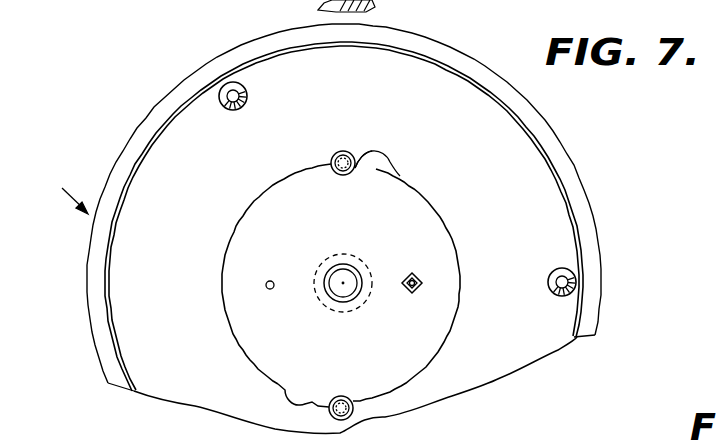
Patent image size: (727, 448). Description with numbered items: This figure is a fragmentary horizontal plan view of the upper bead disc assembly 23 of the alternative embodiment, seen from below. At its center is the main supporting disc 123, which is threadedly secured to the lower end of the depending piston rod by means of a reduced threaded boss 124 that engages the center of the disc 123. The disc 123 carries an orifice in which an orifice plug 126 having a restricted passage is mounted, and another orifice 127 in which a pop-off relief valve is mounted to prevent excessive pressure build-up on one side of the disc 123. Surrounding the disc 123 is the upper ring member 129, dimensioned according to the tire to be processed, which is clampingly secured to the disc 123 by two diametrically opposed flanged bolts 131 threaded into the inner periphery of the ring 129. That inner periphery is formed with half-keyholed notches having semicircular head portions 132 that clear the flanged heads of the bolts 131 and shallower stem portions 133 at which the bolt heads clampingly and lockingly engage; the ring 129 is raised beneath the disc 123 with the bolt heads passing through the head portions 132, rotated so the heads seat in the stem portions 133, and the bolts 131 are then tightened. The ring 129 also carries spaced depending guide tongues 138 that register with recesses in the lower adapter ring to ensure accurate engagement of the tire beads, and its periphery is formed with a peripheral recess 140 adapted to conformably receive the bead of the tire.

The upper bead disc assembly 23 is at (58, 191).
The central main supporting disc 123 is at (308, 348).
The reduced threaded boss 124 is at (348, 277).
The orifice plug 126 is at (411, 295).
The orifice 127 is at (272, 281).
The upper ring member 129 is at (450, 142).
The flanged bolts 131 is at (332, 173).
The semicircular head portions 132 is at (383, 160).
The shallower stem portions 133 is at (358, 175).
The depending guide tongues 138 is at (230, 109).
The peripheral recess 140 is at (543, 147).